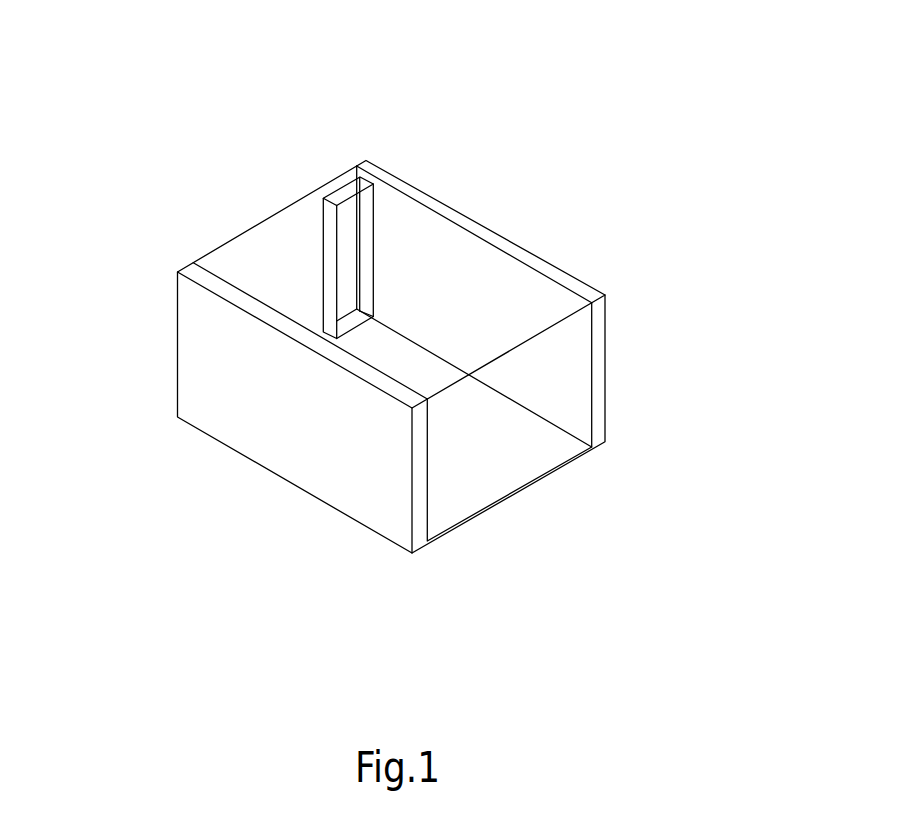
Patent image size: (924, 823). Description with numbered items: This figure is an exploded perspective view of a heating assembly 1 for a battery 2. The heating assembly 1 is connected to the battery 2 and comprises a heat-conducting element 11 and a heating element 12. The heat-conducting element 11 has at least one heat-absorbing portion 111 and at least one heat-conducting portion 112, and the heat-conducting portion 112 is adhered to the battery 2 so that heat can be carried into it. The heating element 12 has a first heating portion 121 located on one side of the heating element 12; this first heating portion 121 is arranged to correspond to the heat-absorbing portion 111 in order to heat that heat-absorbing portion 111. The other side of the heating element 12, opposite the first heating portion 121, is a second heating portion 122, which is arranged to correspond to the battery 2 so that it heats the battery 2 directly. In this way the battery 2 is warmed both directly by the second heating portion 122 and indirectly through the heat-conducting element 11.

The heating assembly 1 is at (822, 88).
The battery 2 is at (204, 368).
The heat-conducting element 11 is at (373, 171).
The heat-absorbing portion 111 is at (367, 208).
The heat-conducting portion 112 is at (377, 192).
The heating element 12 is at (308, 221).
The first heating portion 121 is at (326, 199).
The second heating portion 122 is at (327, 245).